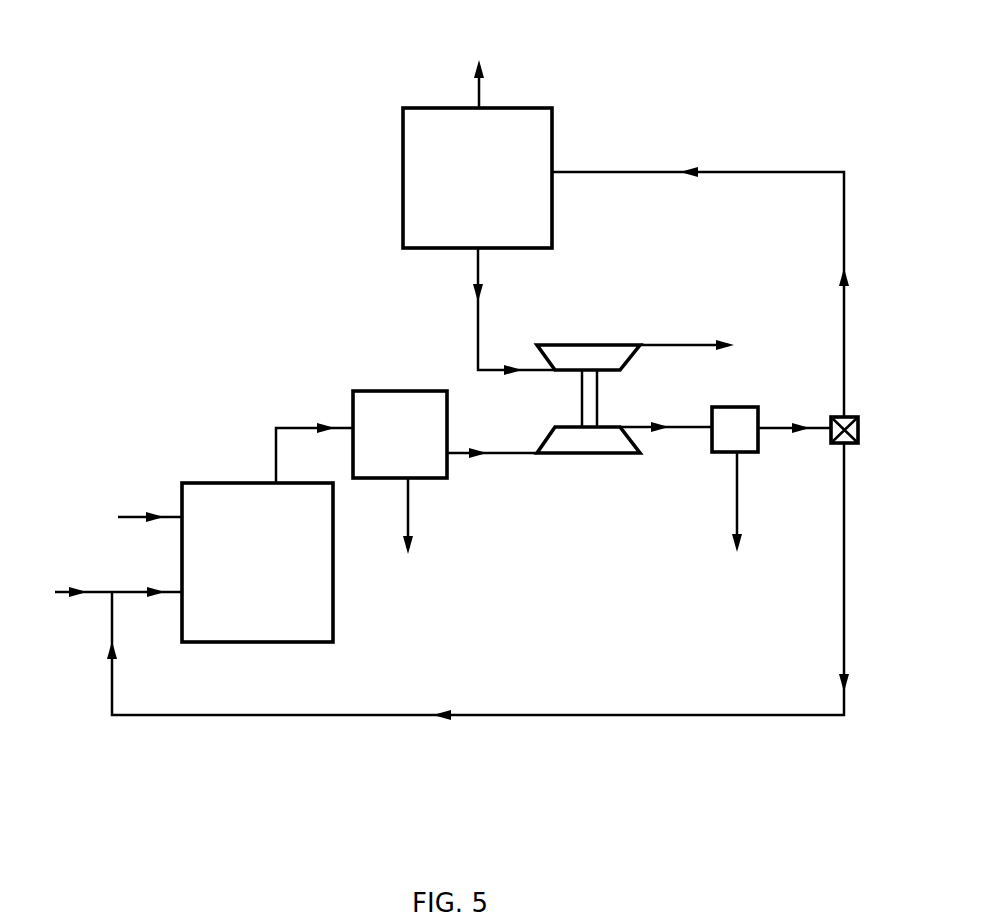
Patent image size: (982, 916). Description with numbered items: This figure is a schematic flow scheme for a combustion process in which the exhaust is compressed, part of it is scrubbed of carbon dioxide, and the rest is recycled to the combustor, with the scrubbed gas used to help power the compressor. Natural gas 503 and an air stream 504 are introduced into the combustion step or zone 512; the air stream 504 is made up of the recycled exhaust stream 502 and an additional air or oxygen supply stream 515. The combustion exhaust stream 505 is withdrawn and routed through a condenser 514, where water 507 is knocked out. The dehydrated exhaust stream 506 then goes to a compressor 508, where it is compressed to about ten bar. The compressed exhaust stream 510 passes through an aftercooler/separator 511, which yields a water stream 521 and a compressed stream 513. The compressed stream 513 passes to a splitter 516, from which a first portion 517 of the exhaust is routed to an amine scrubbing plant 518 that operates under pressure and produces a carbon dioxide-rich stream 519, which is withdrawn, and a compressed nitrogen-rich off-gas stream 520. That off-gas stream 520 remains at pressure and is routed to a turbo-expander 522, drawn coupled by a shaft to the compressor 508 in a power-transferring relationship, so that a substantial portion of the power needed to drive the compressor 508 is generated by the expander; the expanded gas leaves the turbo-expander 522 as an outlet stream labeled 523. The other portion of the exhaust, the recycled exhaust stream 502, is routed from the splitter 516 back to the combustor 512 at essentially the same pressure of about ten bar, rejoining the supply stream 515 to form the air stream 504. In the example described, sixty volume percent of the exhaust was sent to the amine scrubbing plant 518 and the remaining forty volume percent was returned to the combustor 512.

The recycled exhaust stream 502 is at (478, 591).
The natural gas 503 is at (127, 516).
The air stream 504 is at (147, 581).
The combustion exhaust stream 505 is at (314, 441).
The dehydrated exhaust stream 506 is at (492, 439).
The water 507 is at (408, 530).
The compressor 508 is at (582, 455).
The compressed exhaust stream 510 is at (666, 416).
The aftercooler/separator 511 is at (718, 453).
The combustion step or zone 512 is at (213, 483).
The compressed stream 513 is at (794, 416).
The condenser 514 is at (405, 391).
The air or oxygen supply stream 515 is at (77, 581).
The splitter 516 is at (835, 445).
The first portion of the exhaust stream 517 is at (700, 292).
The amine scrubbing plant 518 is at (403, 182).
The carbon dioxide-rich stream 519 is at (479, 71).
The compressed nitrogen-rich off-gas stream 520 is at (514, 311).
The water stream 521 is at (737, 518).
The turbo-expander 522 is at (605, 345).
The compressed stream 523 is at (710, 346).